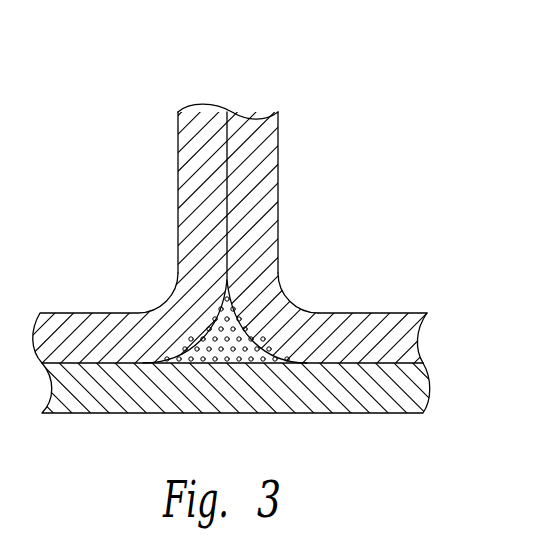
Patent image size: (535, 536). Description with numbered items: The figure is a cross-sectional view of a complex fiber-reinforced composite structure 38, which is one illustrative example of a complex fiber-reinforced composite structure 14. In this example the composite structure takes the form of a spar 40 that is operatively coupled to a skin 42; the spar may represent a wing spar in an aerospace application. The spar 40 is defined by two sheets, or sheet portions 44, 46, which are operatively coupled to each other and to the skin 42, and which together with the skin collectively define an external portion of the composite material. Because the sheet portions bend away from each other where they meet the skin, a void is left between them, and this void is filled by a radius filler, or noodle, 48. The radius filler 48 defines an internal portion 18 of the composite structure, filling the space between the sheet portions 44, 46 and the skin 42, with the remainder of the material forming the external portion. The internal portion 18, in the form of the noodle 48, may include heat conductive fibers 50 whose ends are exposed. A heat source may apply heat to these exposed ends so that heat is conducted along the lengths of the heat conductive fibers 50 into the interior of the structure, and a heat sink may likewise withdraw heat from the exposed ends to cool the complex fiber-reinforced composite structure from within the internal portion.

The complex fiber-reinforced composite structure 14 is at (428, 58).
The complex fiber-reinforced composite structure 38 is at (390, 102).
The spar 40 is at (278, 155).
The skin 42 is at (383, 413).
The sheet portion 44 is at (278, 247).
The sheet portion 46 is at (178, 228).
The radius filler 48 is at (298, 312).
The internal portion 18 is at (250, 320).
The heat conductive fibers 50 is at (217, 364).